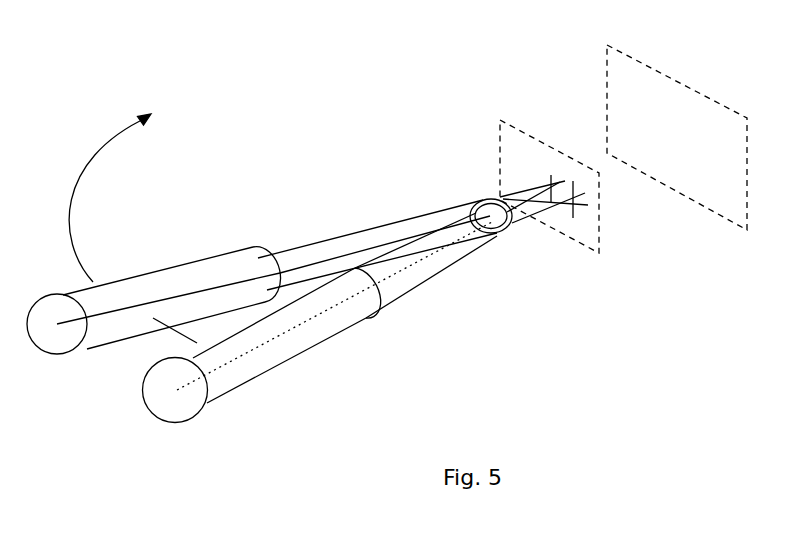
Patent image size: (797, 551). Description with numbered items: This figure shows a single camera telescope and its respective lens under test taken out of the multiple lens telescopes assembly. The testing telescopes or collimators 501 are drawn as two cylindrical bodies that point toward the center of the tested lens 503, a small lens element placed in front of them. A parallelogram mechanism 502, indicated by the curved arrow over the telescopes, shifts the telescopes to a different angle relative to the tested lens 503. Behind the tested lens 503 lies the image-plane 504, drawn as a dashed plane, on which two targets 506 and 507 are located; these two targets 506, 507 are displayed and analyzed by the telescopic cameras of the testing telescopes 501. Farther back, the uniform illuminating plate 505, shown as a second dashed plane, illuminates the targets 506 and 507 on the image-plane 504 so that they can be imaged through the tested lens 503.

The testing telescopes or collimators 501 is at (320, 318).
The parallelogram mechanism 502 is at (133, 228).
The tested lens 503 is at (493, 237).
The image-plane 504 is at (535, 173).
The uniform illuminating plate 505 is at (686, 155).
The target 506 is at (553, 220).
The target 507 is at (572, 217).